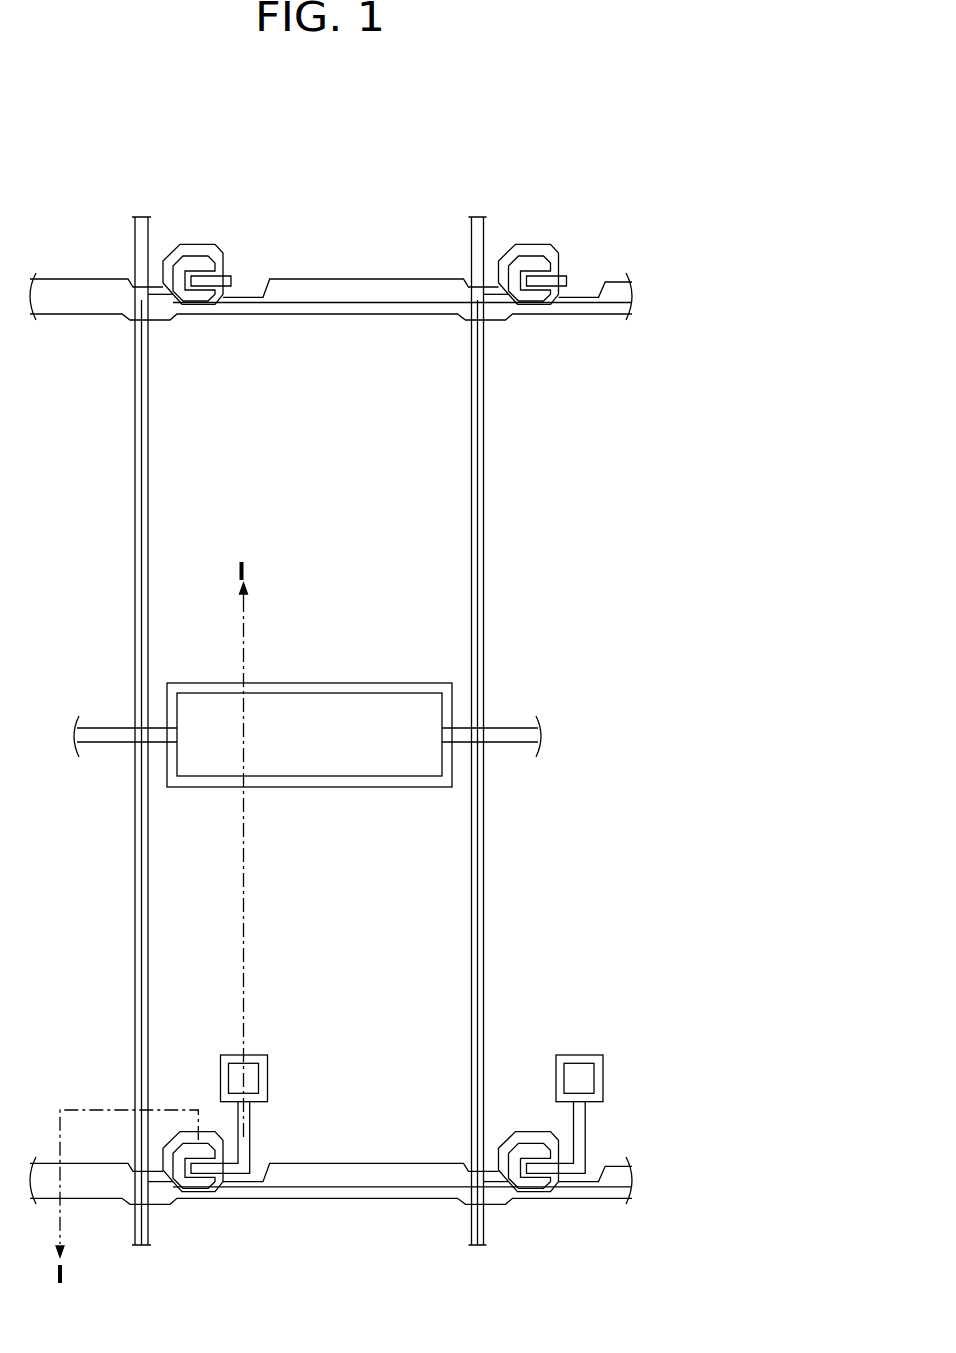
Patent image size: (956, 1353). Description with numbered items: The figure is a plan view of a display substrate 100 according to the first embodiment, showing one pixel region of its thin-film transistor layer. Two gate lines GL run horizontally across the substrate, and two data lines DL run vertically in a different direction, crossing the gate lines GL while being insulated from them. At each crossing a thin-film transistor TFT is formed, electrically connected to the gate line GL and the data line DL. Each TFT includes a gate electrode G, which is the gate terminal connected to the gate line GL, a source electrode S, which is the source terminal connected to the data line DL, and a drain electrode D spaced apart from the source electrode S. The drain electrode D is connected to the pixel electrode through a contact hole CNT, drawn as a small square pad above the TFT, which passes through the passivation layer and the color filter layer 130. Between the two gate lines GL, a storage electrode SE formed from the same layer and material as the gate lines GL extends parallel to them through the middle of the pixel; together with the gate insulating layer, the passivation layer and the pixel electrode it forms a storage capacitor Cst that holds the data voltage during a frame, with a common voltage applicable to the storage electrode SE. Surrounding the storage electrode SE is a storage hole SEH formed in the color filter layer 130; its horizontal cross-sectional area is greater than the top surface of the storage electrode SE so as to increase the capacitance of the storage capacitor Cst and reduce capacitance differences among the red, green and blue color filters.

The display substrate 100 is at (448, 194).
The color filter layer 130 is at (484, 607).
The data line DL is at (135, 943).
The gate line GL is at (437, 1201).
The storage capacitor Cst is at (204, 718).
The storage hole SEH is at (432, 683).
The storage electrode SE is at (420, 777).
The contact hole CNT is at (211, 1078).
The thin-film transistor TFT is at (192, 1197).
The source electrode S is at (181, 1227).
The drain electrode D is at (230, 1206).
The gate electrode G is at (235, 1221).